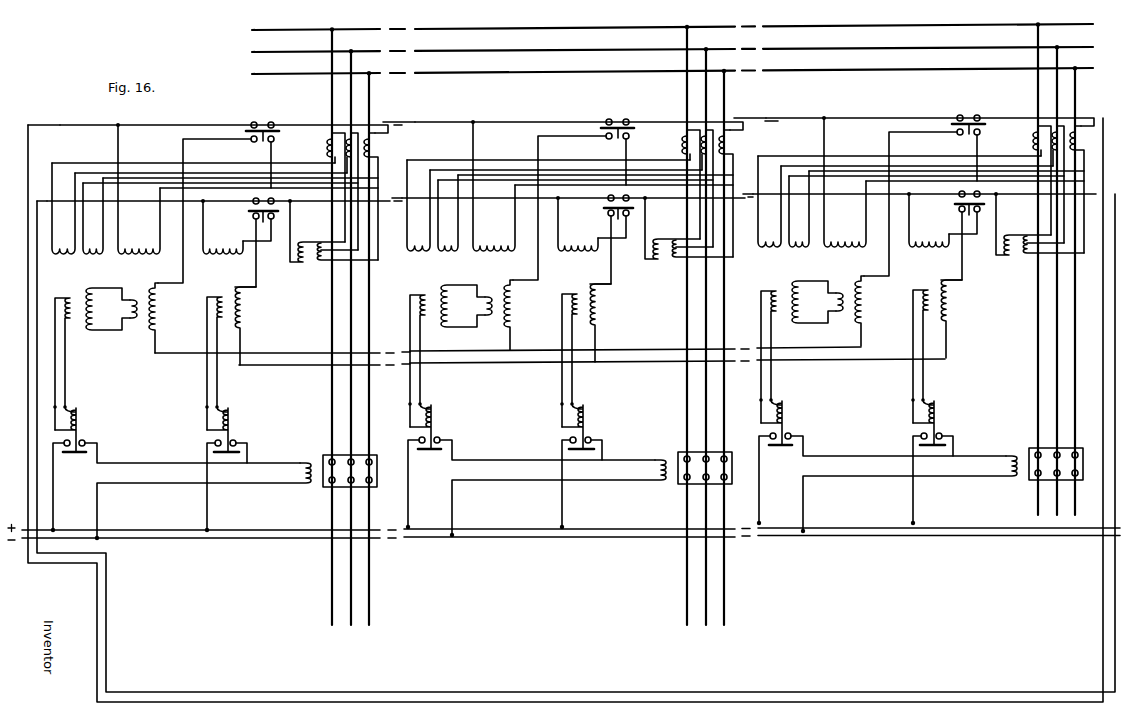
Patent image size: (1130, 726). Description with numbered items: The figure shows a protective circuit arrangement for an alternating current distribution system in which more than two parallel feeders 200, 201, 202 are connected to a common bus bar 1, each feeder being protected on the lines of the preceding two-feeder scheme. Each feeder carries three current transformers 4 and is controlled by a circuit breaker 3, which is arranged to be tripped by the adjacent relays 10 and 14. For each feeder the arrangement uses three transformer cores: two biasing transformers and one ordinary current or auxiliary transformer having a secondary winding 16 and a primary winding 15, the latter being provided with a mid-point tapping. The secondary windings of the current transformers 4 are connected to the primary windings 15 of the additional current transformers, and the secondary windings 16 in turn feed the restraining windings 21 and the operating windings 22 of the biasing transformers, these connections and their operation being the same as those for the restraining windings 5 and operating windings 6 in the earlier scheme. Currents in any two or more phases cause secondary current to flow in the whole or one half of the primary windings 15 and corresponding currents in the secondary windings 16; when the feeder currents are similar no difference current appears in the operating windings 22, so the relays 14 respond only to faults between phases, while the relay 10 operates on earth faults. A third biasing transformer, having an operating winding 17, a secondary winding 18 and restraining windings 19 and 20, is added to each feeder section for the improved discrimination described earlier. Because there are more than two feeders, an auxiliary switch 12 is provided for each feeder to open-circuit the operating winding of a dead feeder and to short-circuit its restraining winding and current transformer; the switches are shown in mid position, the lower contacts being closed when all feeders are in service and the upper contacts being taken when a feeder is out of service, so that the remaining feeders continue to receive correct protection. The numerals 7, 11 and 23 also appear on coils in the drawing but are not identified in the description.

The bus bar 1 is at (596, 72).
The circuit breaker 3 is at (378, 471).
The current transformer 4 is at (327, 148).
The restraining winding 5 is at (139, 245).
The operating winding 6 is at (160, 310).
The coil 7 is at (132, 298).
The relay 10 is at (84, 416).
The coil 11 is at (305, 462).
The auxiliary switch 12 is at (279, 131).
The relay 14 is at (236, 416).
The primary winding 15 is at (319, 262).
The secondary winding 16 is at (298, 263).
The operating winding 17 is at (99, 310).
The secondary winding 18 is at (68, 297).
The restraining winding 19 is at (65, 245).
The restraining winding 20 is at (93, 245).
The restraining winding 21 is at (222, 245).
The operating winding 22 is at (248, 307).
The coil 23 is at (220, 296).
The feeder 200 is at (370, 375).
The feeder 201 is at (725, 372).
The feeder 202 is at (1076, 368).